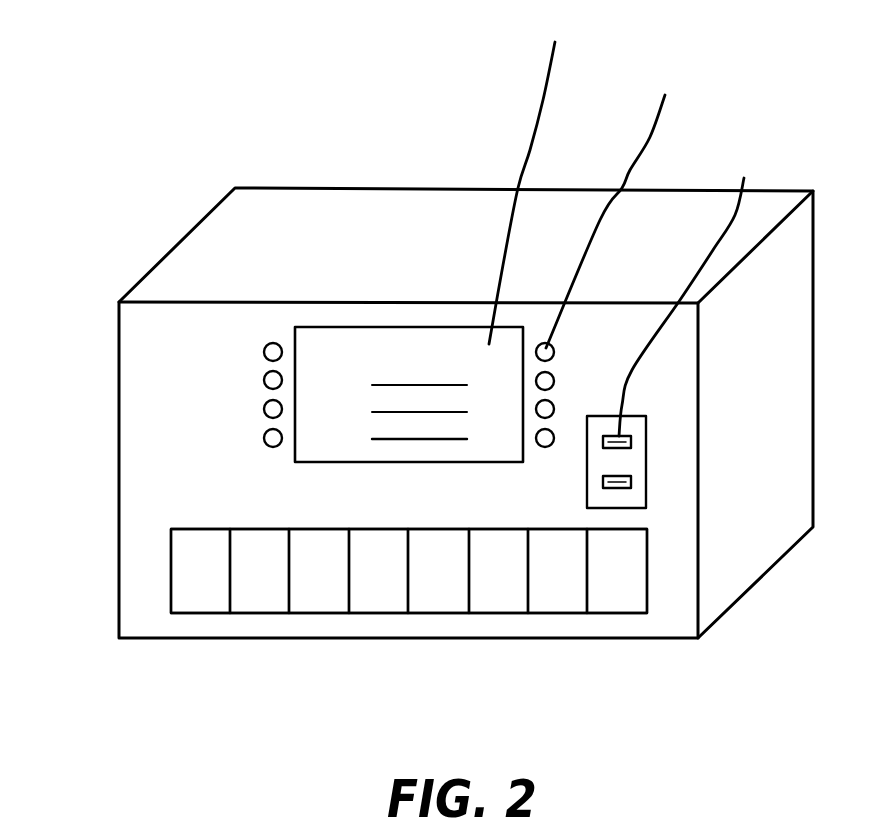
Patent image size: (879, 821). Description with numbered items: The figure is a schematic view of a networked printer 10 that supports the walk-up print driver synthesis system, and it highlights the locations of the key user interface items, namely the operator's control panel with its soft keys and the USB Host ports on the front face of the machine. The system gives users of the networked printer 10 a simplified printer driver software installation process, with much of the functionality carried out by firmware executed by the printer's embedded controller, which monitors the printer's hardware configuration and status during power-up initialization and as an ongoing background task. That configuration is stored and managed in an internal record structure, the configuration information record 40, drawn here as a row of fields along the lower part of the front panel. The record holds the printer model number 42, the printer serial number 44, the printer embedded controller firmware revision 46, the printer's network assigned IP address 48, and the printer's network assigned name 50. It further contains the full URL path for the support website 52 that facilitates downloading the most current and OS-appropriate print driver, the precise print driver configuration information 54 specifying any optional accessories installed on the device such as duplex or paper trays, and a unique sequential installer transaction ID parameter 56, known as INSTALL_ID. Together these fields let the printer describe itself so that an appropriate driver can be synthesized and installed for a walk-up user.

The network printer 10 is at (118, 333).
The configuration information record 40 is at (157, 555).
The printer model number 42 is at (207, 613).
The printer serial number 44 is at (266, 613).
The printer embedded controller firmware revision 46 is at (326, 613).
The printer's network assigned IP address 48 is at (385, 613).
The printer's network assigned name 50 is at (444, 613).
The full URL path for the support website 52 is at (504, 613).
The print driver configuration information 54 is at (563, 613).
The installer transaction ID parameter 56 is at (622, 613).